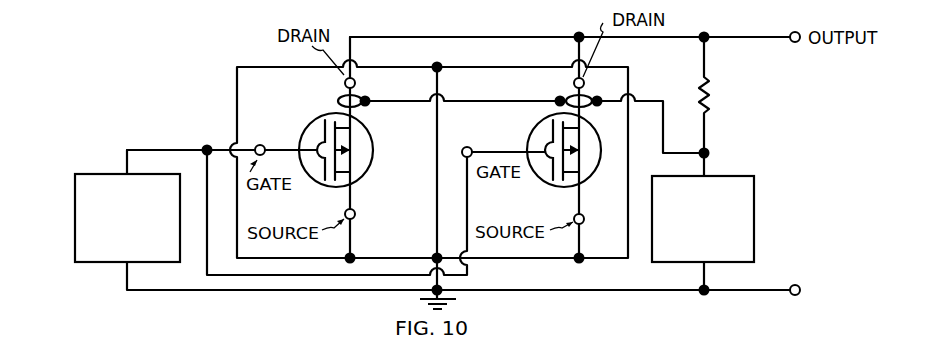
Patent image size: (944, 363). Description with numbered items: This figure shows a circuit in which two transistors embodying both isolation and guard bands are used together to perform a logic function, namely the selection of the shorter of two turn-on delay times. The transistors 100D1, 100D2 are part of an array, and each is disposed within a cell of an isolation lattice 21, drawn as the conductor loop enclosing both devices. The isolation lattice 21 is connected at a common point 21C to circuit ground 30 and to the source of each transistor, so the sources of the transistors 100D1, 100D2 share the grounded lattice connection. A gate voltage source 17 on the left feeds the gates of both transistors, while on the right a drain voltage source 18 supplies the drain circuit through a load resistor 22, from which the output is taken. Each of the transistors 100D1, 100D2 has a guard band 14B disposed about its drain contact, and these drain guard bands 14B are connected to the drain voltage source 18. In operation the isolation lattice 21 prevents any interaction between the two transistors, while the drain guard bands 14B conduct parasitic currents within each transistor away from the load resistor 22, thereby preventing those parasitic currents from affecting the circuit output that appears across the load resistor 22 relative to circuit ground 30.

The gate voltage source 17 is at (75, 217).
The drain voltage source 18 is at (757, 206).
The isolation lattice 21 is at (436, 151).
The connection point of isolation lattice 21C is at (433, 253).
The load resistor 22 is at (708, 109).
The circuit ground 30 is at (455, 300).
The guard band 14B is at (356, 96).
The transistor 100D1 is at (309, 119).
The transistor 100D2 is at (531, 130).